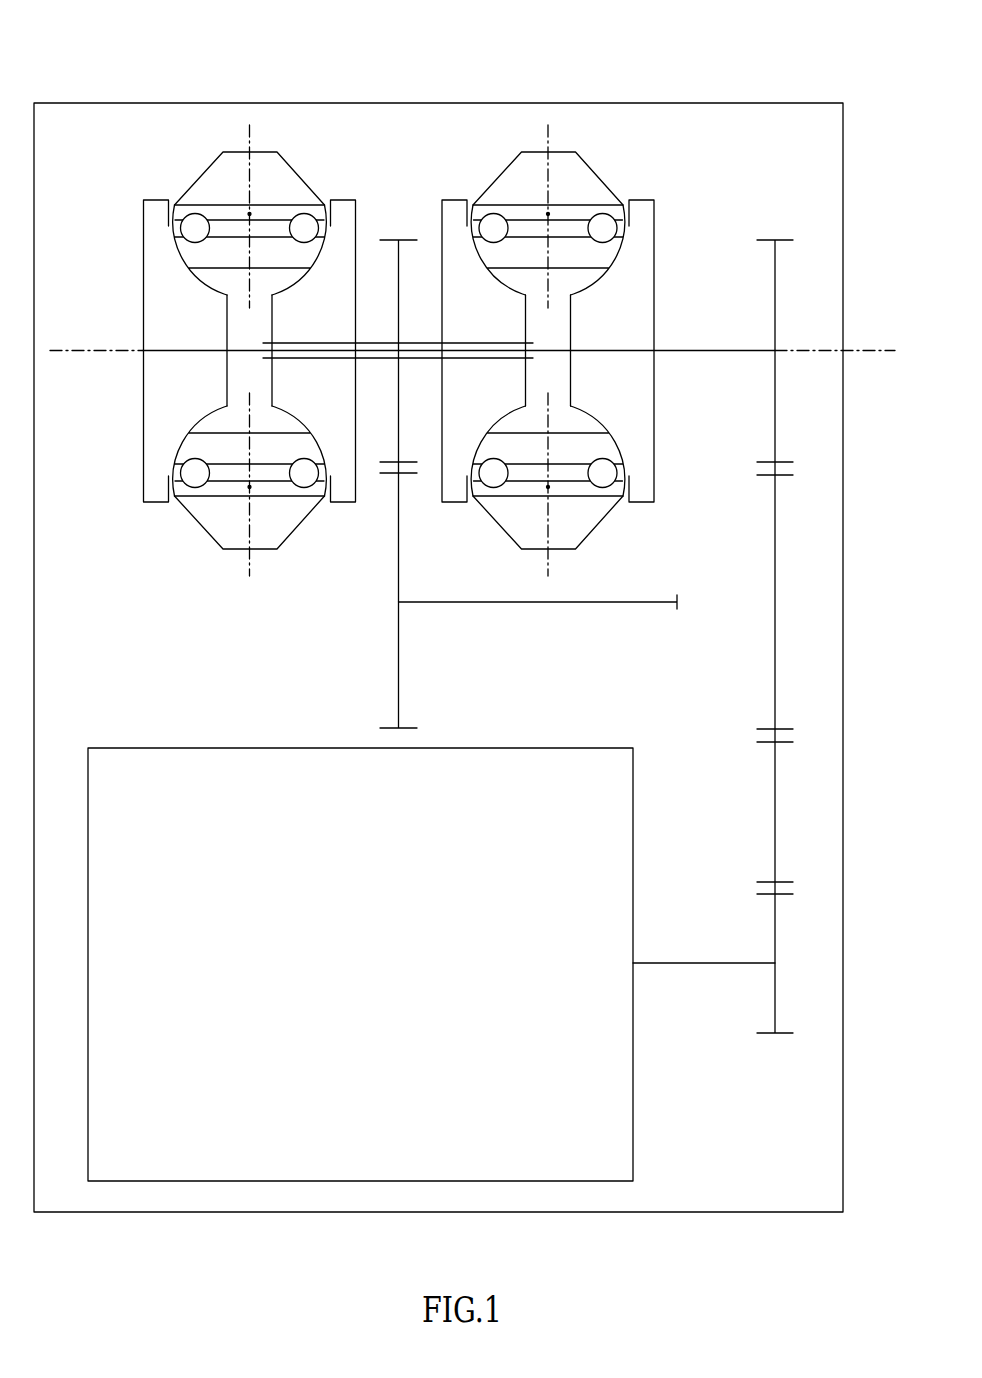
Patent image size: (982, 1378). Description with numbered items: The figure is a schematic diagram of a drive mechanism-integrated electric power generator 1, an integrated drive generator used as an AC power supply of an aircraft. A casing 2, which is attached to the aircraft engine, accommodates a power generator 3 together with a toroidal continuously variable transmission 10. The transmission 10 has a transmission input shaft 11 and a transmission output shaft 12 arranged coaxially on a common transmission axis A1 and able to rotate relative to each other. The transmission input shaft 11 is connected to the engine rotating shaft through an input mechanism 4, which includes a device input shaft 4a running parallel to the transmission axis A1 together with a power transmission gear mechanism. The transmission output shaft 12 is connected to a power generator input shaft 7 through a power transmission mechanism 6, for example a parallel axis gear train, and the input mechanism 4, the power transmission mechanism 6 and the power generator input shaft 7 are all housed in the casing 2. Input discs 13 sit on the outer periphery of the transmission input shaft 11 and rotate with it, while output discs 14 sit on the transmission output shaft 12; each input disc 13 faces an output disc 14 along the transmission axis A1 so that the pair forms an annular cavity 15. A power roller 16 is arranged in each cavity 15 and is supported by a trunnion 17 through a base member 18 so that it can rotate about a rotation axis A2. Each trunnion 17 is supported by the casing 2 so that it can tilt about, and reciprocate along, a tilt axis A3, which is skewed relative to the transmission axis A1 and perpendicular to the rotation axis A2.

The drive mechanism-integrated electric power generator 1 is at (74, 84).
The casing 2 is at (712, 1213).
The power generator 3 is at (577, 1160).
The input mechanism 4 is at (630, 630).
The device input shaft 4a is at (535, 604).
The power transmission mechanism 6 is at (791, 218).
The power generator input shaft 7 is at (672, 965).
The toroidal continuously variable transmission 10 is at (689, 132).
The transmission input shaft 11 is at (425, 342).
The transmission output shaft 12 is at (738, 349).
The input disc 13 is at (343, 503).
The output disc 14 is at (155, 503).
The cavity 15 is at (227, 284).
The power roller 16 is at (190, 251).
The trunnion 17 is at (215, 182).
The base member 18 is at (180, 213).
The transmission axis A1 is at (868, 349).
The rotation axis A2 is at (249, 130).
The tilt axis A3 is at (250, 214).